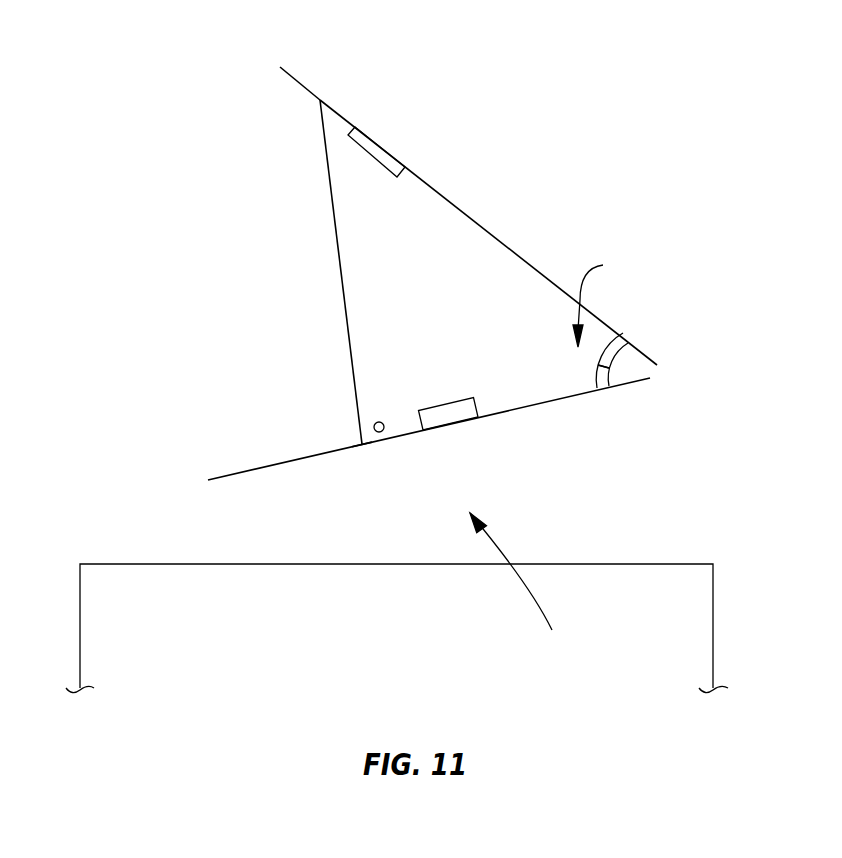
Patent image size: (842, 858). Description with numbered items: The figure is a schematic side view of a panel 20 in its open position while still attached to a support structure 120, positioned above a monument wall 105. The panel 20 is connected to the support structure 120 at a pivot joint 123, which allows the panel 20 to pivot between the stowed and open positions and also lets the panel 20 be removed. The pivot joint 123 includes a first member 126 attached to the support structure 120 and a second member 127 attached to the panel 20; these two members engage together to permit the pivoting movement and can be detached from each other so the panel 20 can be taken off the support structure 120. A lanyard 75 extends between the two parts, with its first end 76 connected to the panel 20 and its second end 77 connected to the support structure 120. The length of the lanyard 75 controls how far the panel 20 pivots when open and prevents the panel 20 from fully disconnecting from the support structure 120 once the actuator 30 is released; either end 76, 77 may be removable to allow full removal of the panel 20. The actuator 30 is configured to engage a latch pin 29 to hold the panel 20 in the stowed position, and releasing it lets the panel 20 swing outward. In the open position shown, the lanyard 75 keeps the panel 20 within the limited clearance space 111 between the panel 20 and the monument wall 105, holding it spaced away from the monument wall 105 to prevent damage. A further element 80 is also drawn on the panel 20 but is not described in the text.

The panel 20 is at (270, 466).
The latch pin 29 is at (377, 434).
The actuator 30 is at (373, 150).
The lanyard 75 is at (336, 222).
The first end 76 is at (357, 442).
The second end 77 is at (313, 101).
The second mounting bracket 80 is at (443, 415).
The monument wall 105 is at (416, 624).
The clearance space 111 is at (518, 586).
The support structure 120 is at (440, 192).
The pivot joint 123 is at (605, 301).
The first member 126 is at (623, 333).
The second member 127 is at (602, 388).